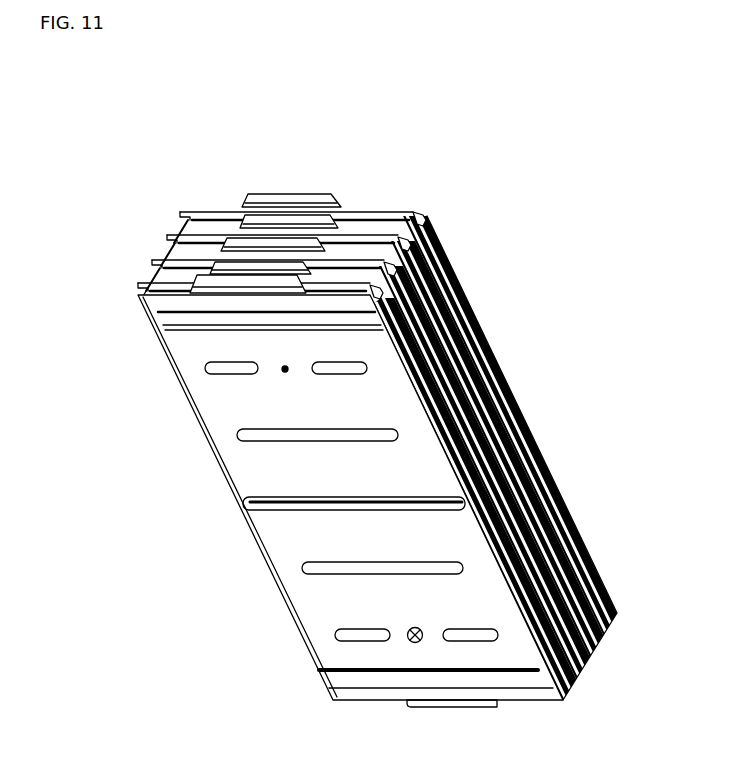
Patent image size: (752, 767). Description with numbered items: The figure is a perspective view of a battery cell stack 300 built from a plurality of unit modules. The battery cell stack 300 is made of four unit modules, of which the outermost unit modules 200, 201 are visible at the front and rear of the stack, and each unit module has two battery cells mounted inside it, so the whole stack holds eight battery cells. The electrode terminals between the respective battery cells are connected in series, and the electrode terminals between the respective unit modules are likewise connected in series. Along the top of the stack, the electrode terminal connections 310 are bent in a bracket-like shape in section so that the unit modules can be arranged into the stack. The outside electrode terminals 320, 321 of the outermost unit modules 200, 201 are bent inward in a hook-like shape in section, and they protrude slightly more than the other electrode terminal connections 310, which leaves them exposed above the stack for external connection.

The battery cell stack 300 is at (86, 125).
The unit module 200 is at (287, 553).
The unit module 201 is at (505, 375).
The electrode terminal connection 310 is at (246, 248).
The outside electrode terminal 320 is at (223, 283).
The outside electrode terminal 321 is at (320, 193).